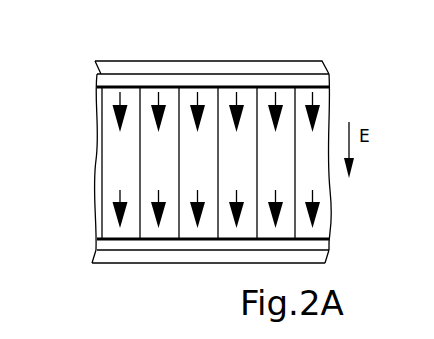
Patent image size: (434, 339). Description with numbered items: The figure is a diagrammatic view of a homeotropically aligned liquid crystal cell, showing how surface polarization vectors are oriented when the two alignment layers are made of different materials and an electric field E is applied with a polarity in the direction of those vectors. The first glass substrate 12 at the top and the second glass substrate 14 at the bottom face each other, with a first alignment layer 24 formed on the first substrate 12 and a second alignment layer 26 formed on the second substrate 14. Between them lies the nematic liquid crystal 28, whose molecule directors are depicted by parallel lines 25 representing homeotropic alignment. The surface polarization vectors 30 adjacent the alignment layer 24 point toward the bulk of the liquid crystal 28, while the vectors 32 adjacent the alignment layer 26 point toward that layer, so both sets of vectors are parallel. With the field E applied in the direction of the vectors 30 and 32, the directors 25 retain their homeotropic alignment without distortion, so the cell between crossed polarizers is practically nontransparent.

The first glass substrate 12 is at (172, 68).
The first alignment layer 24 is at (212, 82).
The liquid crystal 28 is at (157, 152).
The lines 25 is at (138, 165).
The surface polarization vectors 30 is at (118, 96).
The surface polarization vectors 32 is at (120, 195).
The second alignment layer 26 is at (222, 247).
The second glass substrate 14 is at (152, 258).